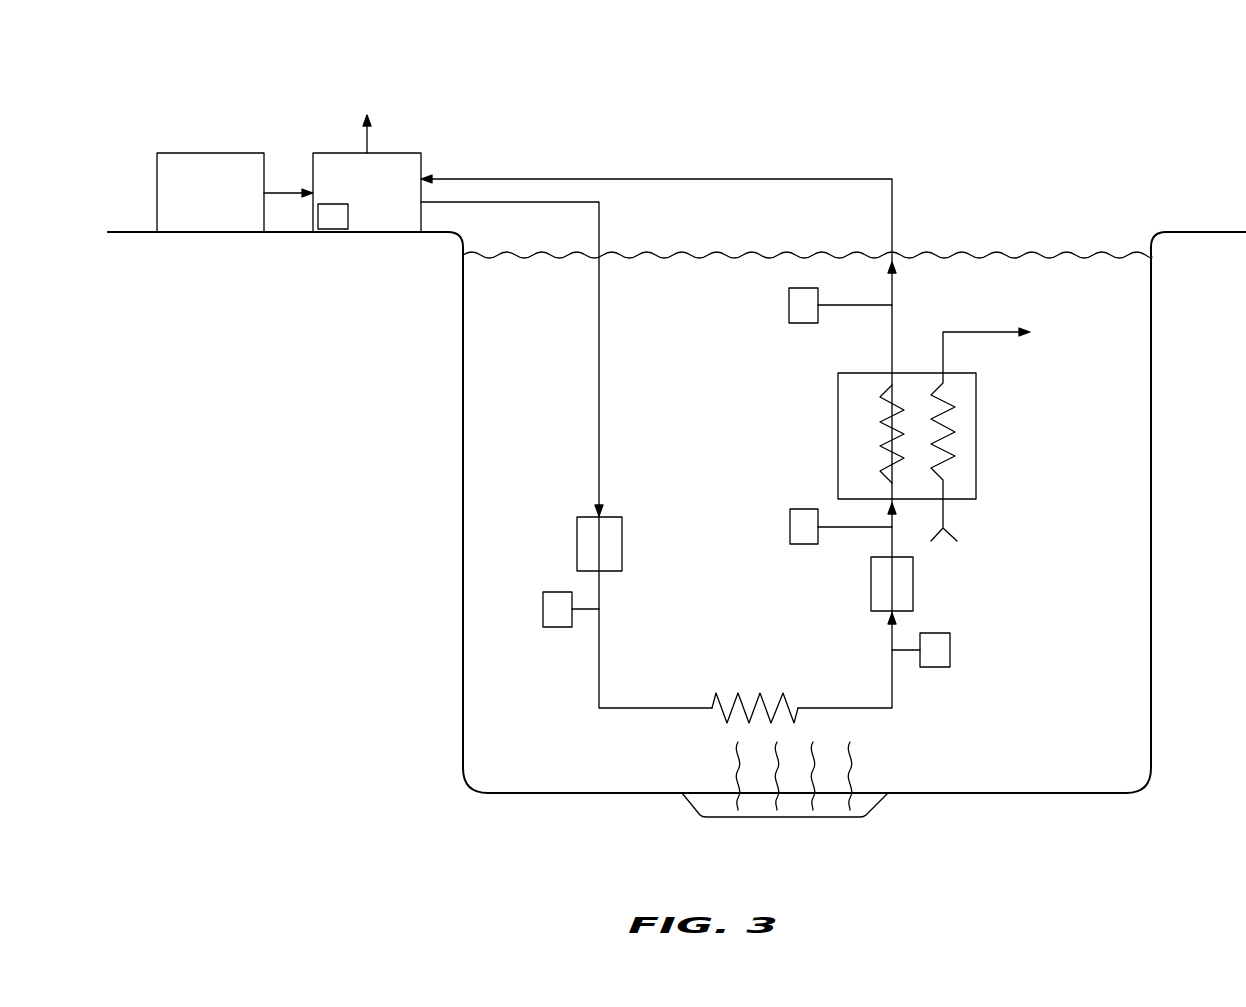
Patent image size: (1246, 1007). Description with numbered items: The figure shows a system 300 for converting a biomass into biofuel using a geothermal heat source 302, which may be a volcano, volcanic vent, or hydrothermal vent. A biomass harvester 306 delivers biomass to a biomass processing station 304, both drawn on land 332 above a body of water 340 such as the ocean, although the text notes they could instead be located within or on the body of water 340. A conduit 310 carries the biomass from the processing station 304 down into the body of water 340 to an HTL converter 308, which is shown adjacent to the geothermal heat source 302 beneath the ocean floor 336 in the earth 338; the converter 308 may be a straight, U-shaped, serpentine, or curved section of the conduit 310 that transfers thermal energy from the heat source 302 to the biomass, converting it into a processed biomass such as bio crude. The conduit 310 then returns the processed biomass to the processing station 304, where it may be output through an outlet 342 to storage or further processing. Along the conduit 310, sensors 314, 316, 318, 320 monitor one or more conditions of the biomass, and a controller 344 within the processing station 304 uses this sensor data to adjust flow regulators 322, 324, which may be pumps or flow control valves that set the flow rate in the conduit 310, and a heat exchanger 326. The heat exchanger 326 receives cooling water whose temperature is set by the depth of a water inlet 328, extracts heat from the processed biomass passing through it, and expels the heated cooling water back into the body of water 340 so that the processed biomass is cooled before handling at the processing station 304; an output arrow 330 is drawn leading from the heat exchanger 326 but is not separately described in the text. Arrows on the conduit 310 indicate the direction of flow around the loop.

The system 300 is at (264, 45).
The geothermal heat source 302 is at (869, 828).
The biomass processing station 304 is at (403, 153).
The biomass harvester 306 is at (214, 153).
The HTL converter 308 is at (753, 677).
The conduit 310 is at (893, 288).
The sensor 314 is at (553, 627).
The sensor 316 is at (950, 650).
The sensor 318 is at (790, 527).
The sensor 320 is at (789, 305).
The flow regulator 322 is at (620, 517).
The flow regulator 324 is at (913, 583).
The heat exchanger 326 is at (977, 400).
The water inlet 328 is at (950, 536).
The output 330 is at (1011, 346).
The exterior region 332 is at (350, 287).
The ocean floor 336 is at (1002, 782).
The earth 338 is at (605, 834).
The body of water 340 is at (535, 357).
The outlet 342 is at (371, 121).
The controller 344 is at (340, 203).